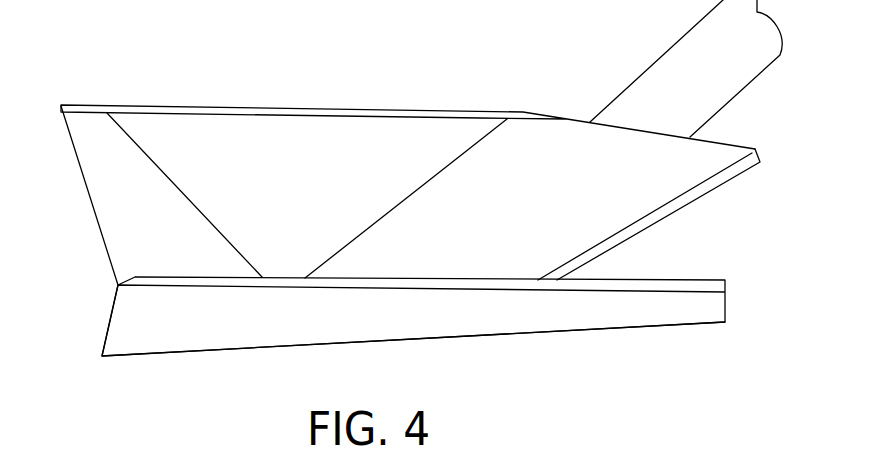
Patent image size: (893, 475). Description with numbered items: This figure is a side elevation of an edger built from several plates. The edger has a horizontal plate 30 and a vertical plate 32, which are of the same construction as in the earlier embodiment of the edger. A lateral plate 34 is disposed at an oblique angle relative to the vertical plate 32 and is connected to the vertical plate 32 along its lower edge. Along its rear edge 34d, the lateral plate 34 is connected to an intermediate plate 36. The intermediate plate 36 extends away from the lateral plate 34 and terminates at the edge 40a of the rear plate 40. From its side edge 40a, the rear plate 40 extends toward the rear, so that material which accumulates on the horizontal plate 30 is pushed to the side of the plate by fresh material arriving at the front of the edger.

The horizontal plate 30 is at (384, 309).
The vertical plate 32 is at (127, 308).
The lateral plate 34 is at (118, 217).
The rear edge 34d is at (170, 177).
The intermediate plate 36 is at (267, 142).
The rear plate 40 is at (680, 173).
The edge 40a is at (443, 168).